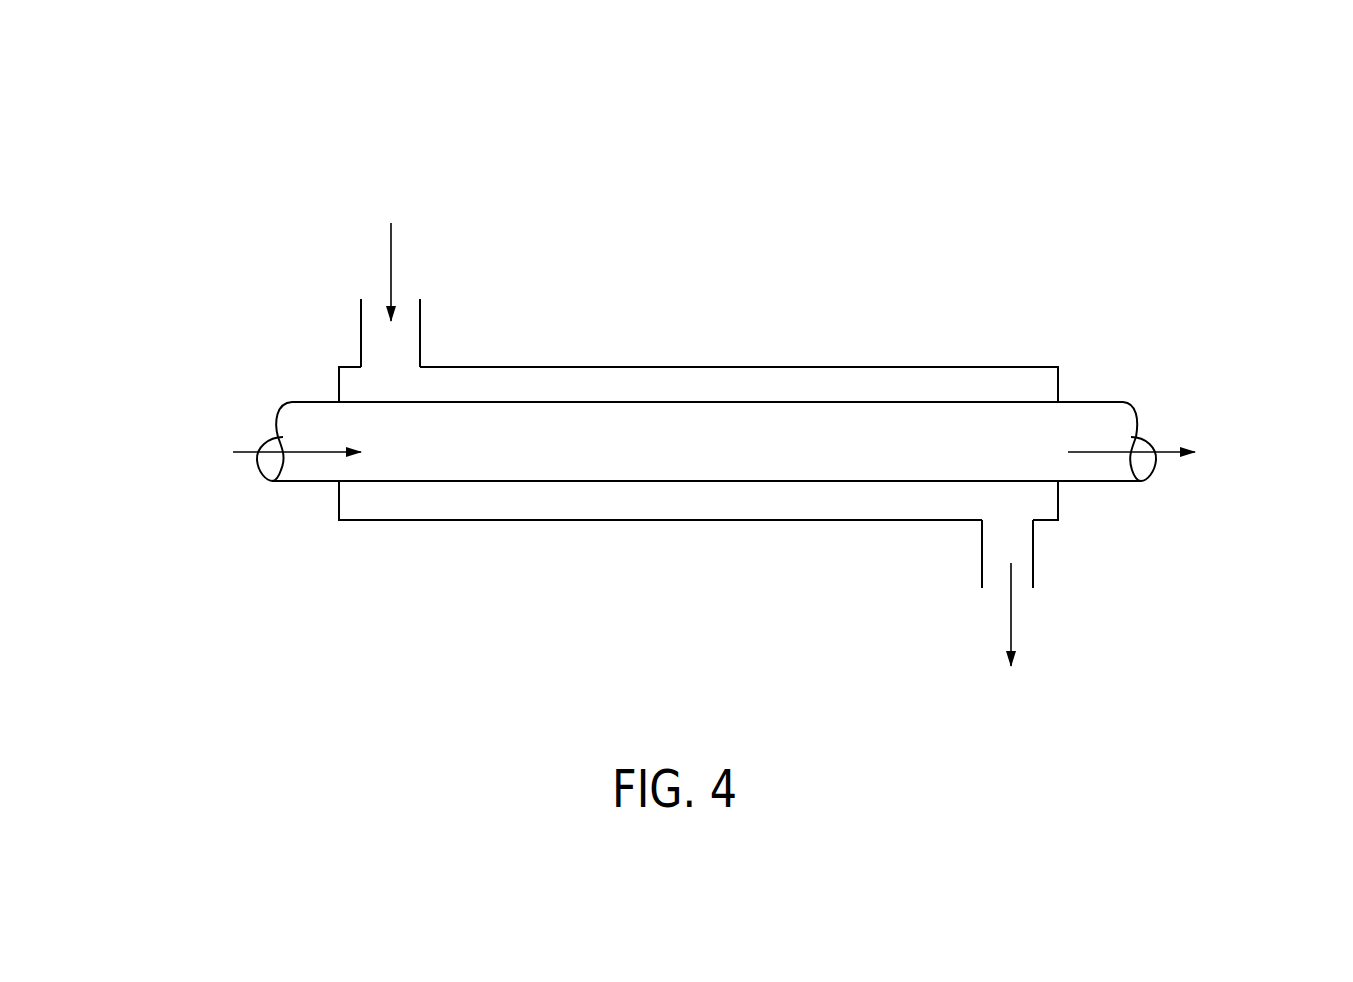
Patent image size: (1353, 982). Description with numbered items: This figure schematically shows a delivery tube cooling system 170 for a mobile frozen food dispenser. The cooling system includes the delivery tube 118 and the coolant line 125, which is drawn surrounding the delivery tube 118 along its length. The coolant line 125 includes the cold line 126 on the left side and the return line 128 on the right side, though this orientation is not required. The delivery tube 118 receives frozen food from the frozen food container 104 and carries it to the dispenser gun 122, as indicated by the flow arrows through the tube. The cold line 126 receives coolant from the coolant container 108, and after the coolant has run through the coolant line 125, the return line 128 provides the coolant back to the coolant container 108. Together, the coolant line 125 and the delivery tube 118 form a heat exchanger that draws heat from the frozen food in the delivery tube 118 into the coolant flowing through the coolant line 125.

The delivery tube cooling system 170 is at (236, 185).
The coolant line 125 is at (712, 338).
The delivery tube 118 is at (480, 467).
The cold line 126 is at (435, 367).
The return line 128 is at (958, 521).
The coolant container 108 is at (1063, 703).
The frozen food container 104 is at (228, 468).
The dispenser gun 122 is at (1307, 468).